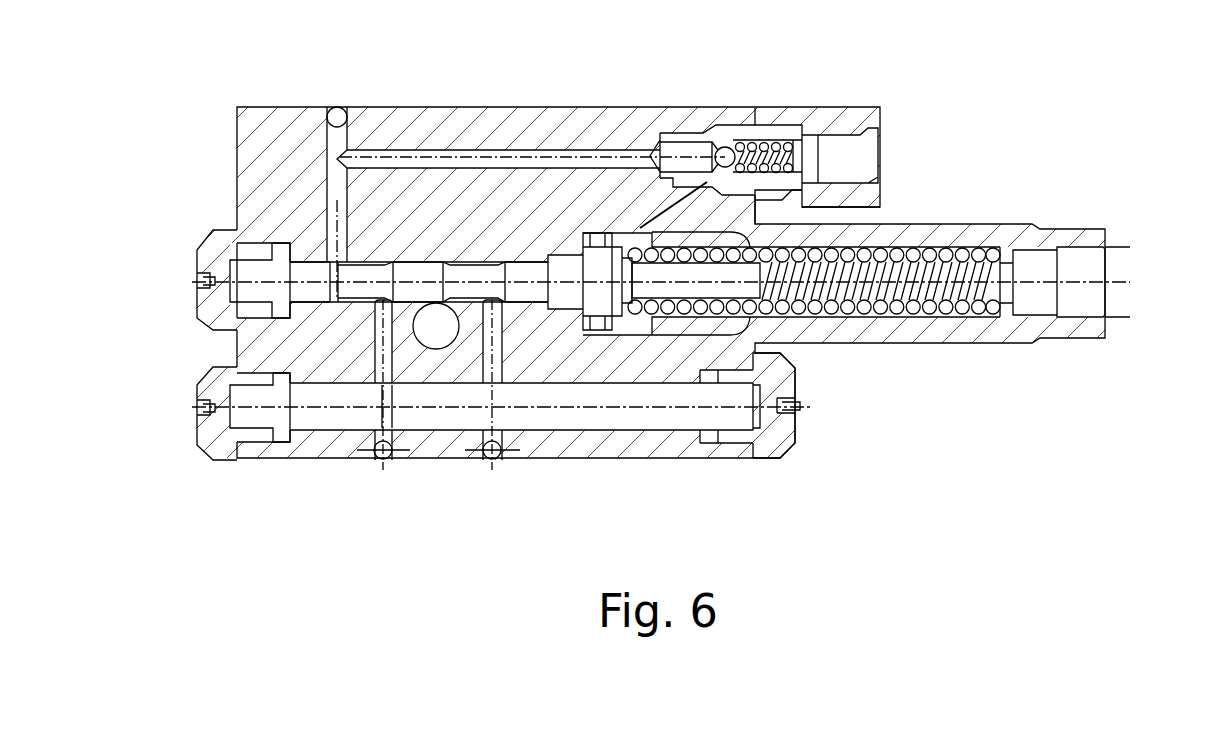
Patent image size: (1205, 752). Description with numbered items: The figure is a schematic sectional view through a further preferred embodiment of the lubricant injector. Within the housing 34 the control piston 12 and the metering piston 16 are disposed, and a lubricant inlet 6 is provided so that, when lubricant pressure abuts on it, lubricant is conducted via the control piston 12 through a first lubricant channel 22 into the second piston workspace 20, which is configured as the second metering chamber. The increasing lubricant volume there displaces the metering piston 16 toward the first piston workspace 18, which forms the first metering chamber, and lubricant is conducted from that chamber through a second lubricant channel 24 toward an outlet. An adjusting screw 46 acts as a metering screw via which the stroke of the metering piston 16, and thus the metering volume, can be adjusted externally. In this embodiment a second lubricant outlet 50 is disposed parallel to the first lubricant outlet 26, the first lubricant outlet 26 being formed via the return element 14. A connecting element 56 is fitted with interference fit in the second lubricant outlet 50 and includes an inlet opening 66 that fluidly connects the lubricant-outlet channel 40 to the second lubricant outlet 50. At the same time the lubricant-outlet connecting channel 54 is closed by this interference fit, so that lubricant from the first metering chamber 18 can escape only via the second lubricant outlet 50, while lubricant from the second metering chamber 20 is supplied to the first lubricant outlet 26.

The housing 34 is at (661, 283).
The control piston 12 is at (408, 270).
The metering piston 16 is at (462, 395).
The lubricant-outlet channel 40 is at (598, 262).
The lubricant-outlet connecting channel 54 is at (662, 205).
The inlet opening 66 is at (668, 138).
The connecting element 56 is at (775, 125).
The second lubricant outlet 50 is at (853, 162).
The return element 14 is at (947, 242).
The adjusting screw 46 is at (222, 257).
The second lubricant channel 24 is at (378, 355).
The first lubricant outlet 26 is at (1087, 295).
The first piston workspace 18 is at (323, 418).
The lubricant inlet 6 is at (436, 330).
The first lubricant channel 22 is at (498, 358).
The second piston workspace 20 is at (758, 408).